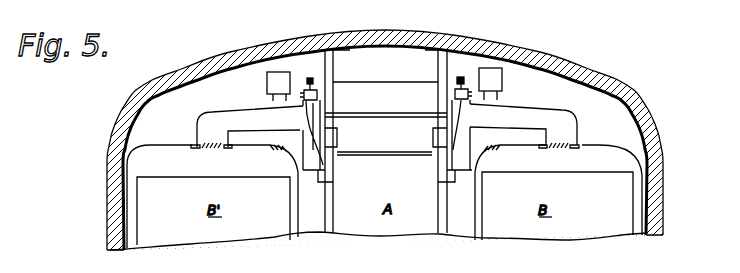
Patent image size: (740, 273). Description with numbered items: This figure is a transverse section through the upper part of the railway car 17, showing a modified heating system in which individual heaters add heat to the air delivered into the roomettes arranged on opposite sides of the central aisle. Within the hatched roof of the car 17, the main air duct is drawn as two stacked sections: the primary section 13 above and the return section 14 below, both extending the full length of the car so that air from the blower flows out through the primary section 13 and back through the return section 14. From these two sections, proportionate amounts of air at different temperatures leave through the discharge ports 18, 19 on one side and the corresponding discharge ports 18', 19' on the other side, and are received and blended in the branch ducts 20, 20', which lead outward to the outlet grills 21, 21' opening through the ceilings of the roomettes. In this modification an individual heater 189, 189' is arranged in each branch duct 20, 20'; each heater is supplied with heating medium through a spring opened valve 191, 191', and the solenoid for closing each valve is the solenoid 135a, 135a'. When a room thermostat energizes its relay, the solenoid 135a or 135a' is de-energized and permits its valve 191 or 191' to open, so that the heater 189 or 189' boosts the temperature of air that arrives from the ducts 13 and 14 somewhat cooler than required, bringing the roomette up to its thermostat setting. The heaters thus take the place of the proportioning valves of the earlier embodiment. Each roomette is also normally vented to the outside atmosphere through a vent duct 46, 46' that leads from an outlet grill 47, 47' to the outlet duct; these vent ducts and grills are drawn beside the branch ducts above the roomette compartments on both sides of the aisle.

The railway car 17 is at (367, 27).
The valve solenoid 135a is at (480, 57).
The valve solenoid 135a' is at (339, 80).
The vent duct 46 is at (502, 82).
The vent duct 46' is at (292, 77).
The branch duct 20 is at (523, 112).
The branch duct 20' is at (250, 115).
The discharge port 18 is at (411, 86).
The discharge port 18' is at (357, 95).
The primary section 13 is at (405, 105).
The return section 14 is at (398, 142).
The discharge port 19 is at (427, 136).
The discharge port 19' is at (345, 135).
The spring opened valve 191 is at (471, 141).
The spring opened valve 191' is at (290, 141).
The individual heater 189 is at (459, 133).
The individual heater 189' is at (340, 140).
The outlet grill 21 is at (560, 155).
The outlet grill 21' is at (212, 156).
The outlet grill 47 is at (510, 192).
The outlet grill 47' is at (263, 191).